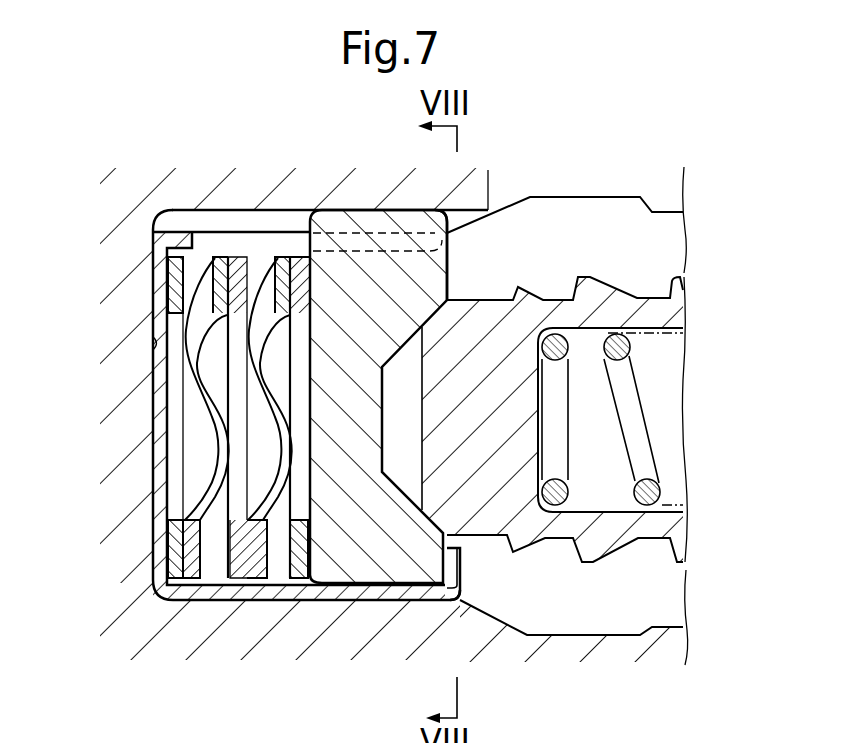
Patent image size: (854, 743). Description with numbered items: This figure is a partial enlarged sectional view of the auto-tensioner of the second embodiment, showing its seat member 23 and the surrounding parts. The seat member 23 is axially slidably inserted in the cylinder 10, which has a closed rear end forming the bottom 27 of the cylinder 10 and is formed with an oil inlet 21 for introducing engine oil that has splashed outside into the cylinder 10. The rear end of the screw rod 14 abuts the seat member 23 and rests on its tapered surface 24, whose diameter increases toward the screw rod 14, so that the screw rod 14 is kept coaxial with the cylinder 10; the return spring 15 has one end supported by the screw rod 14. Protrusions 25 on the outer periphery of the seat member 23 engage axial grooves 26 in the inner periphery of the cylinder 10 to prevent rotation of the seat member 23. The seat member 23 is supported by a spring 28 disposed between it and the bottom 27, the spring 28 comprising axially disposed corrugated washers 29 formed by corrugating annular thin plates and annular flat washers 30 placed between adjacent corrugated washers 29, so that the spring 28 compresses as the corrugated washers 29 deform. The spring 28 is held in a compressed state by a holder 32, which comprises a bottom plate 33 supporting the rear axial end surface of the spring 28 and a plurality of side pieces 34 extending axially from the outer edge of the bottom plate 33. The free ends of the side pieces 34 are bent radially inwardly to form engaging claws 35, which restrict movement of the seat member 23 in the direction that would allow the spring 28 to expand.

The cylinder 10 is at (677, 648).
The screw rod 14 is at (670, 310).
The return spring 15 is at (655, 483).
The oil inlet 21 is at (668, 187).
The seat member 23 is at (358, 567).
The tapered surface 24 is at (406, 480).
The protrusions 25 is at (347, 222).
The axial grooves 26 is at (382, 222).
The bottom of the cylinder 27 is at (158, 345).
The spring 28 is at (214, 563).
The corrugated washers 29 is at (218, 258).
The annular flat washers 30 is at (175, 268).
The holder 32 is at (465, 592).
The bottom plate 33 is at (157, 425).
The side pieces 34 is at (278, 593).
The engaging claws 35 is at (458, 557).